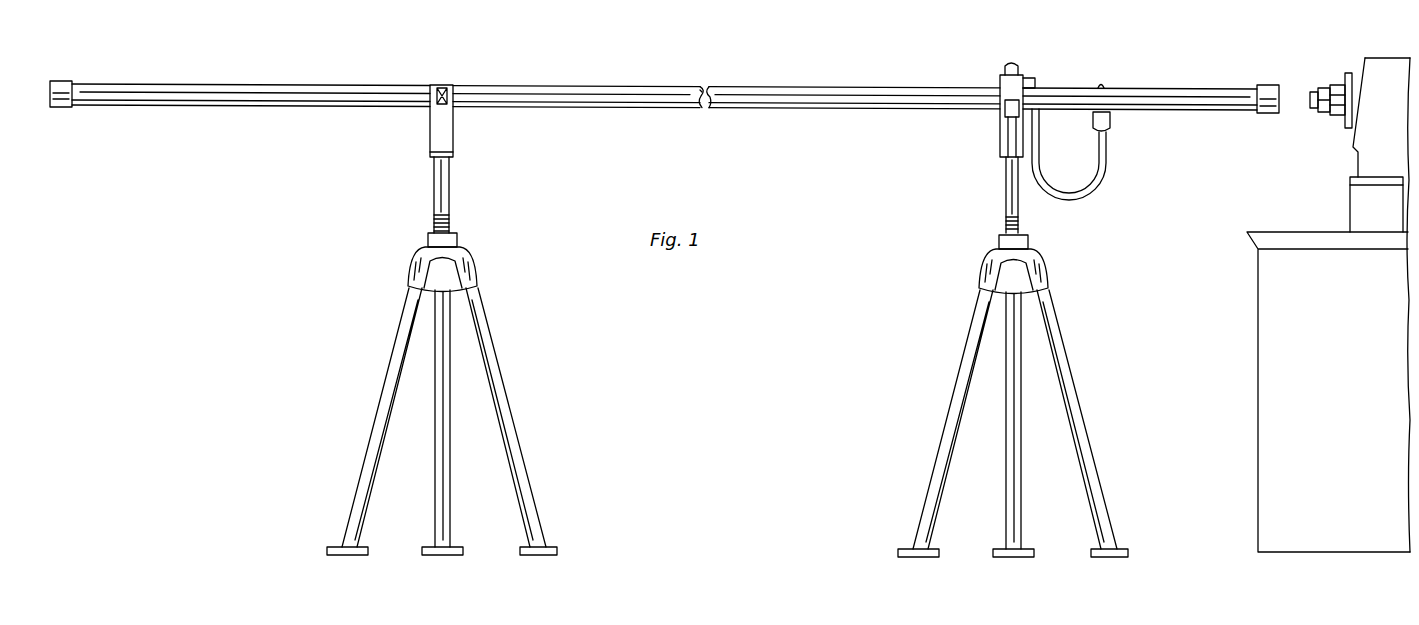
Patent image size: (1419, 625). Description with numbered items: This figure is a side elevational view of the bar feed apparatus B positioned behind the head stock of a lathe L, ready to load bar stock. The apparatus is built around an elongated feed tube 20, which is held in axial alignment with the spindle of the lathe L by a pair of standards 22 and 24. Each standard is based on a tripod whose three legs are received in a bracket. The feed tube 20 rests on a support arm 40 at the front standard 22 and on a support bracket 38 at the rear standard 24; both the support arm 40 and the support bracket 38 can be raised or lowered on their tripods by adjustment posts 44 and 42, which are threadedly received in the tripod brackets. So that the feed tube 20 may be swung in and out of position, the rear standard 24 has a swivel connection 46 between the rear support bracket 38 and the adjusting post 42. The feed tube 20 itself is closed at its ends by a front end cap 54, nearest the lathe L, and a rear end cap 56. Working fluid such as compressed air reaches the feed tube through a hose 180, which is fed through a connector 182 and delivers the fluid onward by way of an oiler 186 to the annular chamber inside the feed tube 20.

The feed tube 20 is at (909, 97).
The standard 22 is at (1001, 172).
The standard 24 is at (453, 204).
The support bracket 38 is at (430, 128).
The support arm 40 is at (1000, 136).
The adjustment post 42 is at (455, 216).
The adjustment post 44 is at (1003, 218).
The swivel connection 46 is at (455, 154).
The front end cap 54 is at (1266, 85).
The rear end cap 56 is at (65, 82).
The hose 180 is at (1107, 170).
The connector 182 is at (1036, 80).
The oiler 186 is at (1110, 121).
The bar feed apparatus B is at (759, 80).
The lathe L is at (1353, 64).